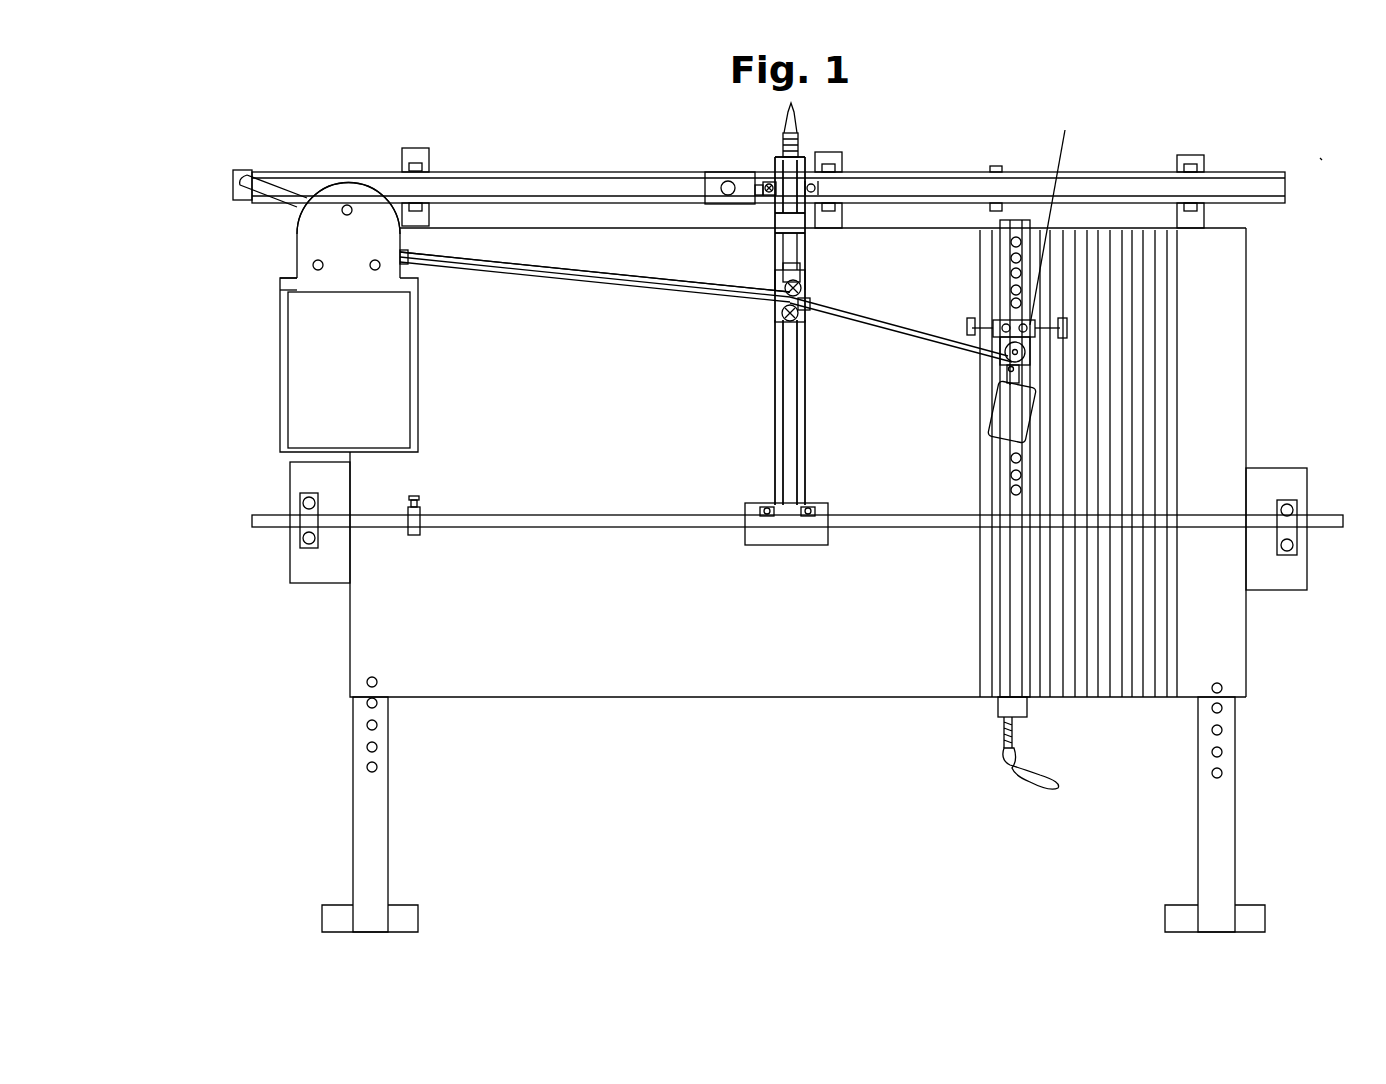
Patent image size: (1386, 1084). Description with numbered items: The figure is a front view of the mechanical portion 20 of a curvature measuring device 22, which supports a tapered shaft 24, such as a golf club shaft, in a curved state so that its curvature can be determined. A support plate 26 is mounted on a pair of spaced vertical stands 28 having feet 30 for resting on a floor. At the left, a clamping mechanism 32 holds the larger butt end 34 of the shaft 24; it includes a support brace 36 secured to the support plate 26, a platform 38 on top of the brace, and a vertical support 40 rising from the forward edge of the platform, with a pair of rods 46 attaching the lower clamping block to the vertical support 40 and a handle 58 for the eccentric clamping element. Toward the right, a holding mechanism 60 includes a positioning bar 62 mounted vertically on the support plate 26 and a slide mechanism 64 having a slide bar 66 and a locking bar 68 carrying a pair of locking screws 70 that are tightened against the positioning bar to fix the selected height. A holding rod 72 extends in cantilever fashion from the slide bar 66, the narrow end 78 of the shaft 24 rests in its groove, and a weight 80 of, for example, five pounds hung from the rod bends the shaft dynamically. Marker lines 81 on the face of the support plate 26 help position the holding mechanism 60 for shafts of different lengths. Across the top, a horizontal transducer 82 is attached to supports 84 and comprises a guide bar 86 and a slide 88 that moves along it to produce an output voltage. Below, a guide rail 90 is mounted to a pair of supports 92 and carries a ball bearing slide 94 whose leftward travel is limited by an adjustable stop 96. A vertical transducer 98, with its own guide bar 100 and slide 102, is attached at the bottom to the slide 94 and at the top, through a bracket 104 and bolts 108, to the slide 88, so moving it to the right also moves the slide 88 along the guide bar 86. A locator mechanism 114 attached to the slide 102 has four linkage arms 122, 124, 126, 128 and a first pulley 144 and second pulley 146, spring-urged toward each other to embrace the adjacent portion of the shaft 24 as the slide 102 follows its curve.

The mechanical portion 20 is at (1250, 295).
The curvature measuring device 22 is at (1322, 158).
The tapered shaft 24 is at (582, 283).
The support plate 26 is at (1240, 338).
The vertical stands 28 is at (352, 795).
The feet 30 is at (330, 908).
The clamping mechanism 32 is at (293, 248).
The butt end 34 is at (438, 263).
The support brace 36 is at (295, 340).
The platform 38 is at (283, 284).
The vertical support 40 is at (305, 228).
The rods 46 is at (378, 262).
The handle 58 is at (248, 183).
The holding mechanism 60 is at (950, 372).
The positioning bar 62 is at (1008, 640).
The slide mechanism 64 is at (992, 318).
The slide bar 66 is at (1032, 350).
The locking bar 68 is at (1056, 211).
The locking screws 70 is at (988, 328).
The holding rod 72 is at (1010, 378).
The narrow end 78 is at (1016, 362).
The weight 80 is at (1002, 434).
The marker lines 81 is at (1108, 692).
The horizontal transducer 82 is at (529, 170).
The supports 84 is at (415, 160).
The guide bar 86 is at (947, 185).
The slide 88 is at (742, 182).
The guide rail 90 is at (543, 515).
The supports 92 is at (298, 470).
The ball bearing slide 94 is at (764, 546).
The adjustable stop 96 is at (413, 536).
The vertical transducer 98 is at (772, 437).
The guide bar 100 is at (792, 388).
The slide 102 is at (795, 252).
The bracket 104 is at (813, 185).
The bolts 108 is at (822, 187).
The locator mechanism 114 is at (760, 320).
The linkage arm 122 is at (806, 298).
The linkage arm 124 is at (810, 314).
The linkage arm 126 is at (778, 302).
The linkage arm 128 is at (776, 290).
The first pulley 144 is at (800, 287).
The second pulley 146 is at (782, 318).